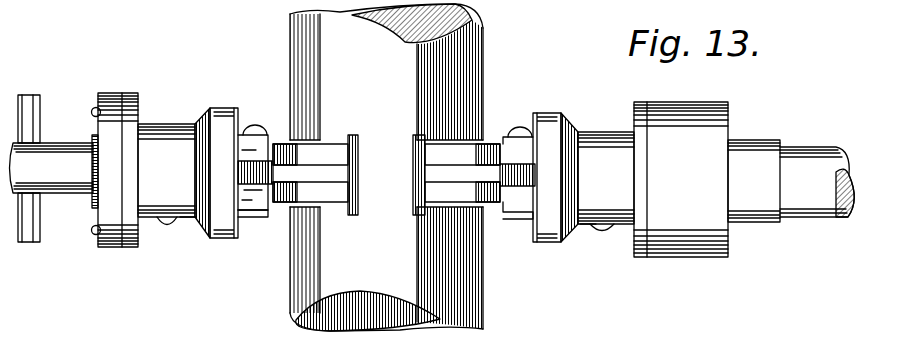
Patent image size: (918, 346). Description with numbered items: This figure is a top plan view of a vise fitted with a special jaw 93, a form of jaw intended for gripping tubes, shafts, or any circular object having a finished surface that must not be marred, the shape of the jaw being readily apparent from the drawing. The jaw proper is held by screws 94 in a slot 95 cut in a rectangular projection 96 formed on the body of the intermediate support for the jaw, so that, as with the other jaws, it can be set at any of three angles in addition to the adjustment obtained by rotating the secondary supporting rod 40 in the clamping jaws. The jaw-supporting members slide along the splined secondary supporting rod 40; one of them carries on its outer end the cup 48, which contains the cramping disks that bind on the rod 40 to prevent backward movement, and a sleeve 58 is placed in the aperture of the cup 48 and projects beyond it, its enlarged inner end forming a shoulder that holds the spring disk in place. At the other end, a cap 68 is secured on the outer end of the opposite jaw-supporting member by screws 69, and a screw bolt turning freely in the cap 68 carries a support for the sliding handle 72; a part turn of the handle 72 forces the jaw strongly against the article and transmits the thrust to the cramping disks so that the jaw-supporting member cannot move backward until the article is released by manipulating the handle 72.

The secondary supporting rod 40 is at (824, 157).
The cup 48 is at (690, 102).
The sleeve 58 is at (744, 140).
The cap 68 is at (118, 94).
The screws 69 is at (93, 109).
The sliding handle 72 is at (47, 114).
The special jaw 93 is at (319, 172).
The screws 94 is at (258, 132).
The slot 95 is at (248, 184).
The rectangular projection 96 is at (258, 201).